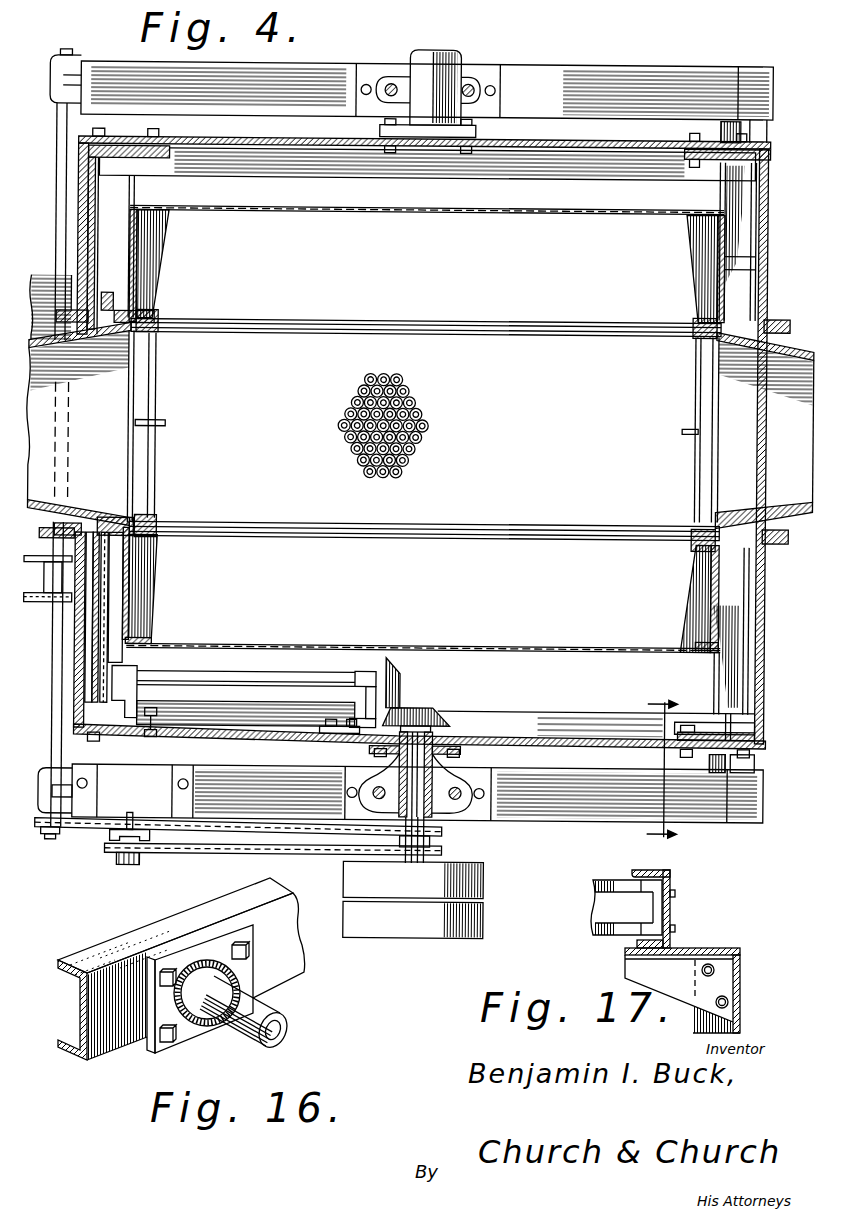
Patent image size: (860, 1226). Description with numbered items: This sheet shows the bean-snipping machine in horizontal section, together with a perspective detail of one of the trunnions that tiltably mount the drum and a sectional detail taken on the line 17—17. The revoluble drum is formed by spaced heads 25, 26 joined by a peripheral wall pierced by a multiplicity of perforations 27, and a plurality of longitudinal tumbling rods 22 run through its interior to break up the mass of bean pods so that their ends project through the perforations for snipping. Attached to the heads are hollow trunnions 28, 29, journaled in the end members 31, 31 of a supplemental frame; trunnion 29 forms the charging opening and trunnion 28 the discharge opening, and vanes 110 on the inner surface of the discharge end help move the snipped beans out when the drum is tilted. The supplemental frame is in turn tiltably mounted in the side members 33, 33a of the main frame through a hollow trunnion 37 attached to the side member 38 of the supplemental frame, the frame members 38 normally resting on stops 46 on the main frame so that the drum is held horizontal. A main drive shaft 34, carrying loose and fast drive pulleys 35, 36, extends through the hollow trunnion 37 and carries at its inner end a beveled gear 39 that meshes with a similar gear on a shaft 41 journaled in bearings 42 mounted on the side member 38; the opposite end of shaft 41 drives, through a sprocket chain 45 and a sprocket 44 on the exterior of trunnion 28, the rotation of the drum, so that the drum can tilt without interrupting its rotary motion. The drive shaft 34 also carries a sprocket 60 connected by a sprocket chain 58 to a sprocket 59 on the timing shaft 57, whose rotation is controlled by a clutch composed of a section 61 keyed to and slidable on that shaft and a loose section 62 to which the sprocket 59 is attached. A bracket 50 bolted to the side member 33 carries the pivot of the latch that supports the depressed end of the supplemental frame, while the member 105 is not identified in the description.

In FIG. 4, the section line 17 is at (661, 770).
In FIG. 4, the longitudinal tumbling rods 22 is at (514, 331).
In FIG. 4, the head 25 is at (127, 602).
In FIG. 4, the head 26 is at (715, 585).
In FIG. 4, the perforations 27 is at (367, 464).
In FIG. 4, the hollow trunnion 28 is at (90, 405).
In FIG. 4, the hollow trunnion 29 is at (764, 432).
In FIG. 4, the end member 31 is at (80, 222).
In FIG. 17, the end member 31 is at (610, 936).
In FIG. 4, the side member 33 is at (540, 821).
In FIG. 4, the side member 33a is at (592, 62).
In FIG. 4, the main drive shaft 34 is at (445, 815).
In FIG. 4, the loose drive pulley 35 is at (485, 918).
In FIG. 4, the fast drive pulley 36 is at (480, 885).
In FIG. 4, the hollow trunnion 37 is at (440, 760).
In FIG. 16, the hollow trunnion 37 is at (275, 1008).
In FIG. 4, the side member 38 is at (530, 745).
In FIG. 16, the side member 38 is at (139, 934).
In FIG. 17, the side member 38 is at (672, 903).
In FIG. 4, the beveled gear 39 is at (420, 713).
In FIG. 4, the shaft 41 is at (283, 673).
In FIG. 4, the bearings 42 is at (134, 675).
In FIG. 4, the sprocket 44 is at (132, 300).
In FIG. 4, the sprocket chain 45 is at (109, 593).
In FIG. 17, the stops 46 is at (685, 950).
In FIG. 4, the bracket 50 is at (403, 686).
In FIG. 4, the shaft 57 is at (157, 818).
In FIG. 4, the sprocket chain 58 is at (311, 854).
In FIG. 4, the sprocket 59 is at (110, 851).
In FIG. 4, the sprocket 60 is at (448, 855).
In FIG. 4, the clutch section 61 is at (150, 832).
In FIG. 4, the clutch section 62 is at (134, 867).
In FIG. 4, the rail 105 is at (256, 826).
In FIG. 4, the vanes 110 is at (158, 248).